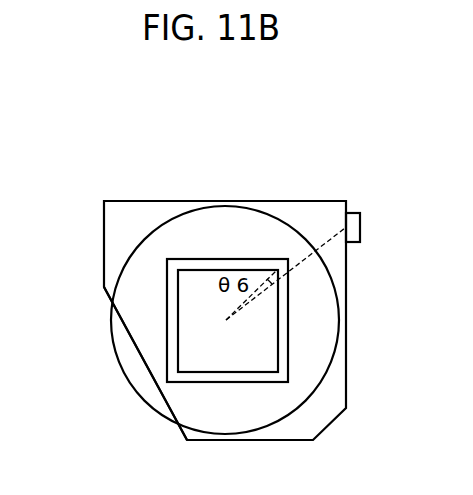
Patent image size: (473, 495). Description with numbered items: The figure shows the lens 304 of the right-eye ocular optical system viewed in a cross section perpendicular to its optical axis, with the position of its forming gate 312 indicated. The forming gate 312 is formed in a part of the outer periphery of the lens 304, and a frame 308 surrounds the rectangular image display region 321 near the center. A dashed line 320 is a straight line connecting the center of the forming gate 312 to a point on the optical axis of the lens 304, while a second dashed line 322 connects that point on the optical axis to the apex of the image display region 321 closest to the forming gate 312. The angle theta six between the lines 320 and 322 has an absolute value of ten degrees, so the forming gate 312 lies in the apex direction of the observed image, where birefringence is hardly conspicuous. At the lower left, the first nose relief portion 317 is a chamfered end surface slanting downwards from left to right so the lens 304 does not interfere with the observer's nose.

The lens 304 is at (112, 252).
The outer frame 308 is at (205, 259).
The forming gate 312 is at (358, 213).
The first nose relief portion 317 is at (135, 360).
The line 320 is at (303, 256).
The image display region 321 is at (278, 318).
The line 322 is at (266, 272).